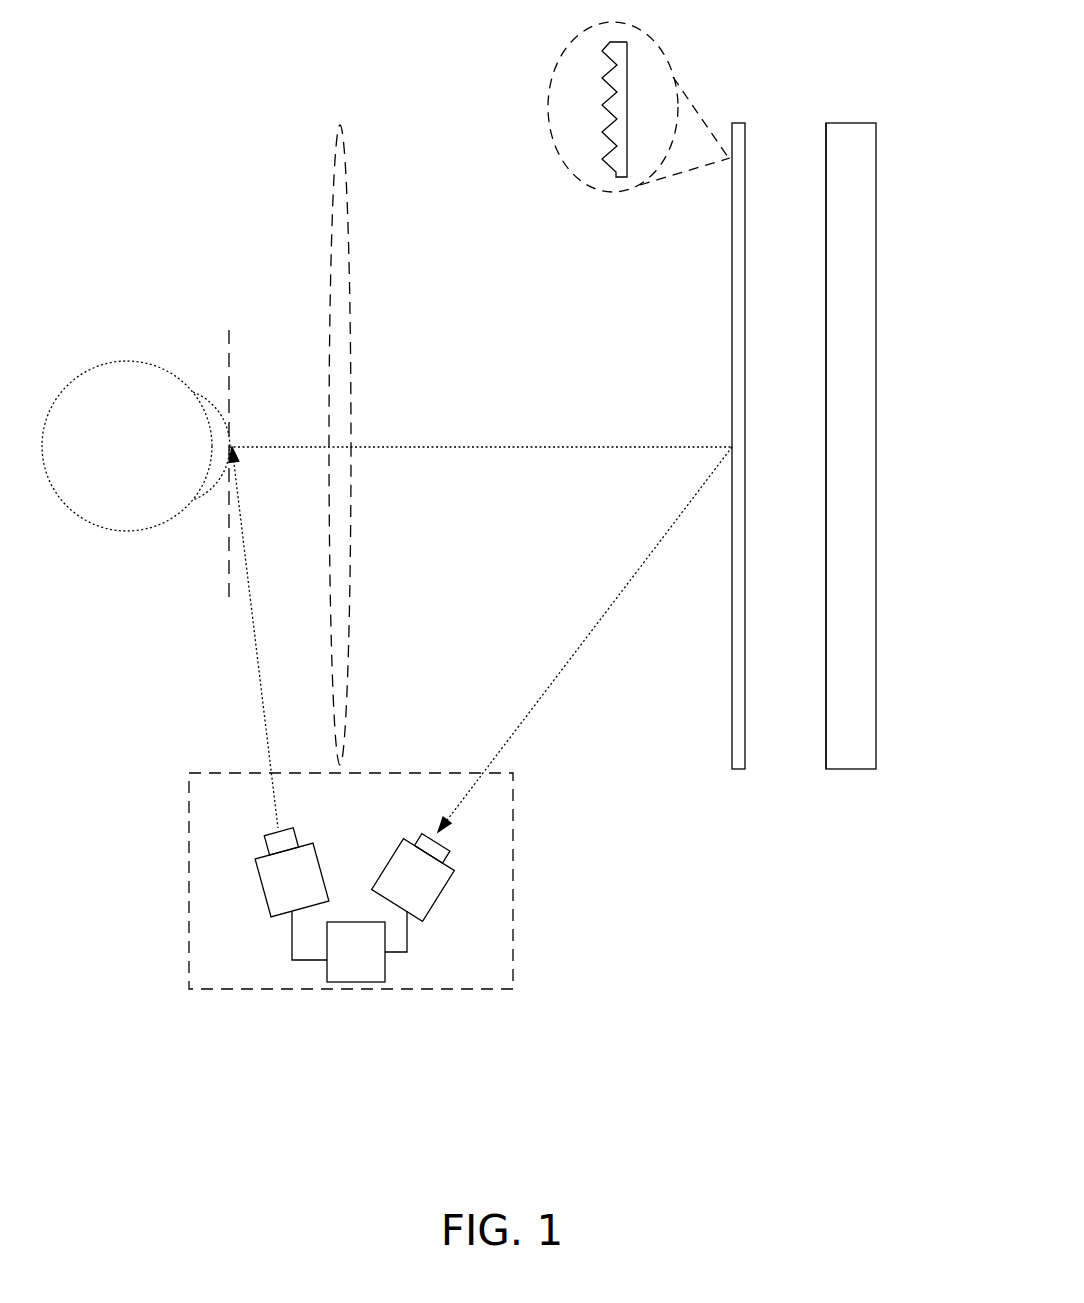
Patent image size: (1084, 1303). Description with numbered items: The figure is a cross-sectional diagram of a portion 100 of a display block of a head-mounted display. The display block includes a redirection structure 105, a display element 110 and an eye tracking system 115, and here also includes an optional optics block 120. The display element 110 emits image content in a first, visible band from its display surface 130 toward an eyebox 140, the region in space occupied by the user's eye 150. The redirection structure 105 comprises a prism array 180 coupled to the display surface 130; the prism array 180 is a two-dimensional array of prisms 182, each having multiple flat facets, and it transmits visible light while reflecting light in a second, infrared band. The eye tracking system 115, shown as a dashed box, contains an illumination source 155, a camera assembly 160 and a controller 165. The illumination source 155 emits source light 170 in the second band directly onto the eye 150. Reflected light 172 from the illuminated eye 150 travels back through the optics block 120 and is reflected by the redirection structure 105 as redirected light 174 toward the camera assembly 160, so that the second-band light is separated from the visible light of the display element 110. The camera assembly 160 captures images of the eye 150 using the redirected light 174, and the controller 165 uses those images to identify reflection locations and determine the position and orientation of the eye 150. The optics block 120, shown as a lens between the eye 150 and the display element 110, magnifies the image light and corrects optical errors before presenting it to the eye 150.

The portion of a display block 100 is at (88, 66).
The redirection structure 105 is at (732, 294).
The display element 110 is at (876, 245).
The eye tracking system 115 is at (381, 917).
The optics block 120 is at (342, 131).
The display surface 130 is at (826, 724).
The eyebox 140 is at (229, 380).
The eye 150 is at (66, 507).
The illumination source 155 is at (267, 898).
The camera assembly 160 is at (442, 893).
The controller 165 is at (359, 982).
The source light 170 is at (260, 683).
The reflected light 172 is at (523, 446).
The redirected light 174 is at (535, 708).
The prism array 180 is at (586, 164).
The prism 182 is at (610, 155).